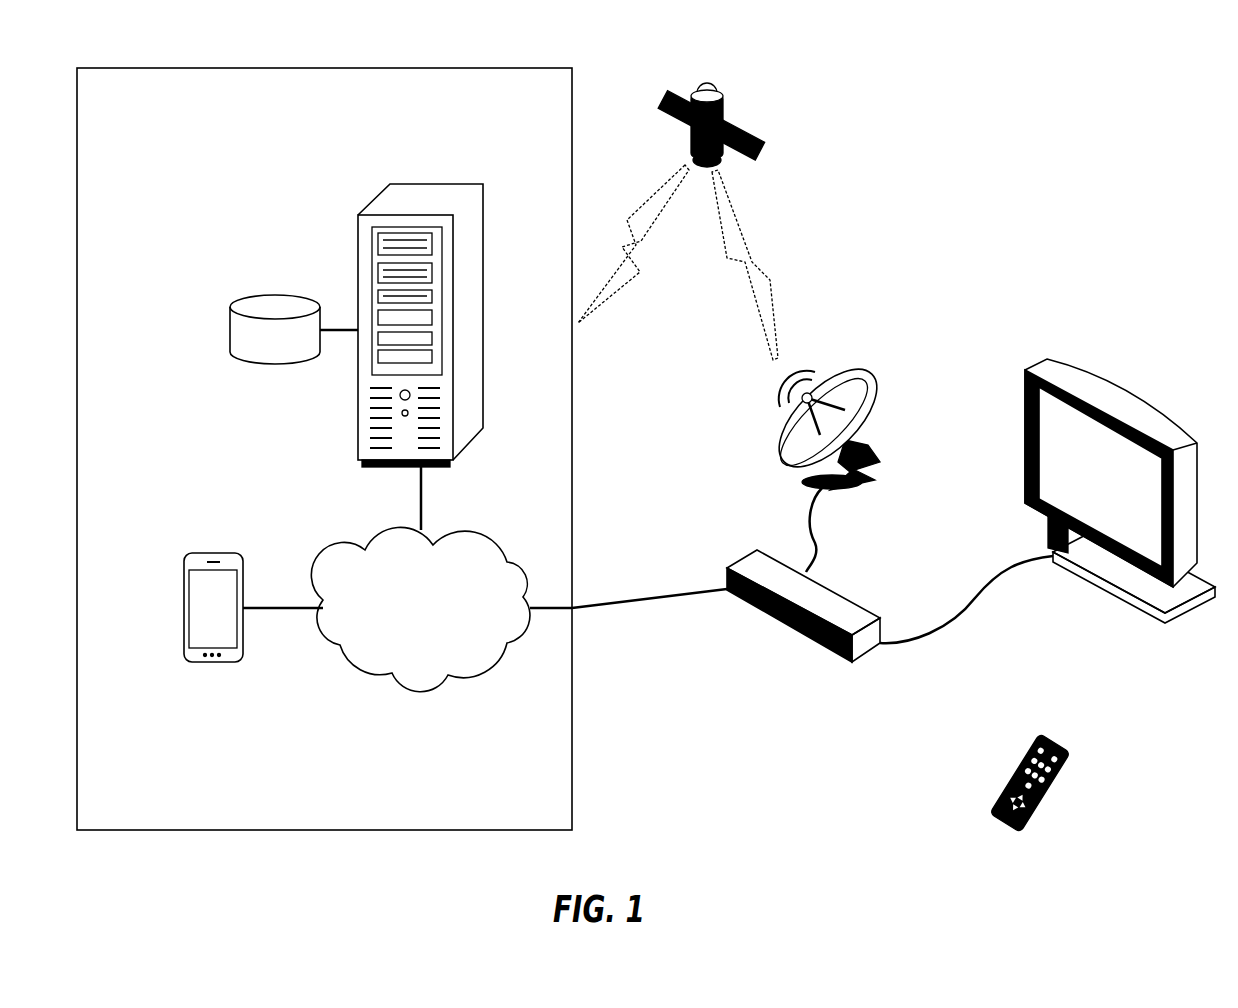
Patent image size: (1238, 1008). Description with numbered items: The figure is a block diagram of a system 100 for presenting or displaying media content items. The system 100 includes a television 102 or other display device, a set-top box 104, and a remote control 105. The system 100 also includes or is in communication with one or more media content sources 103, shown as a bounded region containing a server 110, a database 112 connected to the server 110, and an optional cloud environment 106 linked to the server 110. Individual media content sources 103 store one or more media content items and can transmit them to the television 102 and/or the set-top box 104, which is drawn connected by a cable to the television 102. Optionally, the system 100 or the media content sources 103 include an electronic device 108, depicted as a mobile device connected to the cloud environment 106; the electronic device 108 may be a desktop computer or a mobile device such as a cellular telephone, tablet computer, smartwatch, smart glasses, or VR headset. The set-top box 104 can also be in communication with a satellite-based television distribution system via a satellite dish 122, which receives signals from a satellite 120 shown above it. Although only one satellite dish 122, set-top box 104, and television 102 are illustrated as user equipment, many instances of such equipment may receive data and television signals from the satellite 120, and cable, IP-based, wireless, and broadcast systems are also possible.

The system 100 is at (1117, 155).
The television 102 is at (1100, 372).
The media content sources 103 is at (305, 66).
The set-top box 104 is at (805, 645).
The remote control 105 is at (1048, 803).
The cloud environment 106 is at (410, 693).
The electronic device 108 is at (183, 603).
The server 110 is at (390, 203).
The database 112 is at (237, 318).
The satellite 120 is at (727, 108).
The satellite dish 122 is at (872, 375).